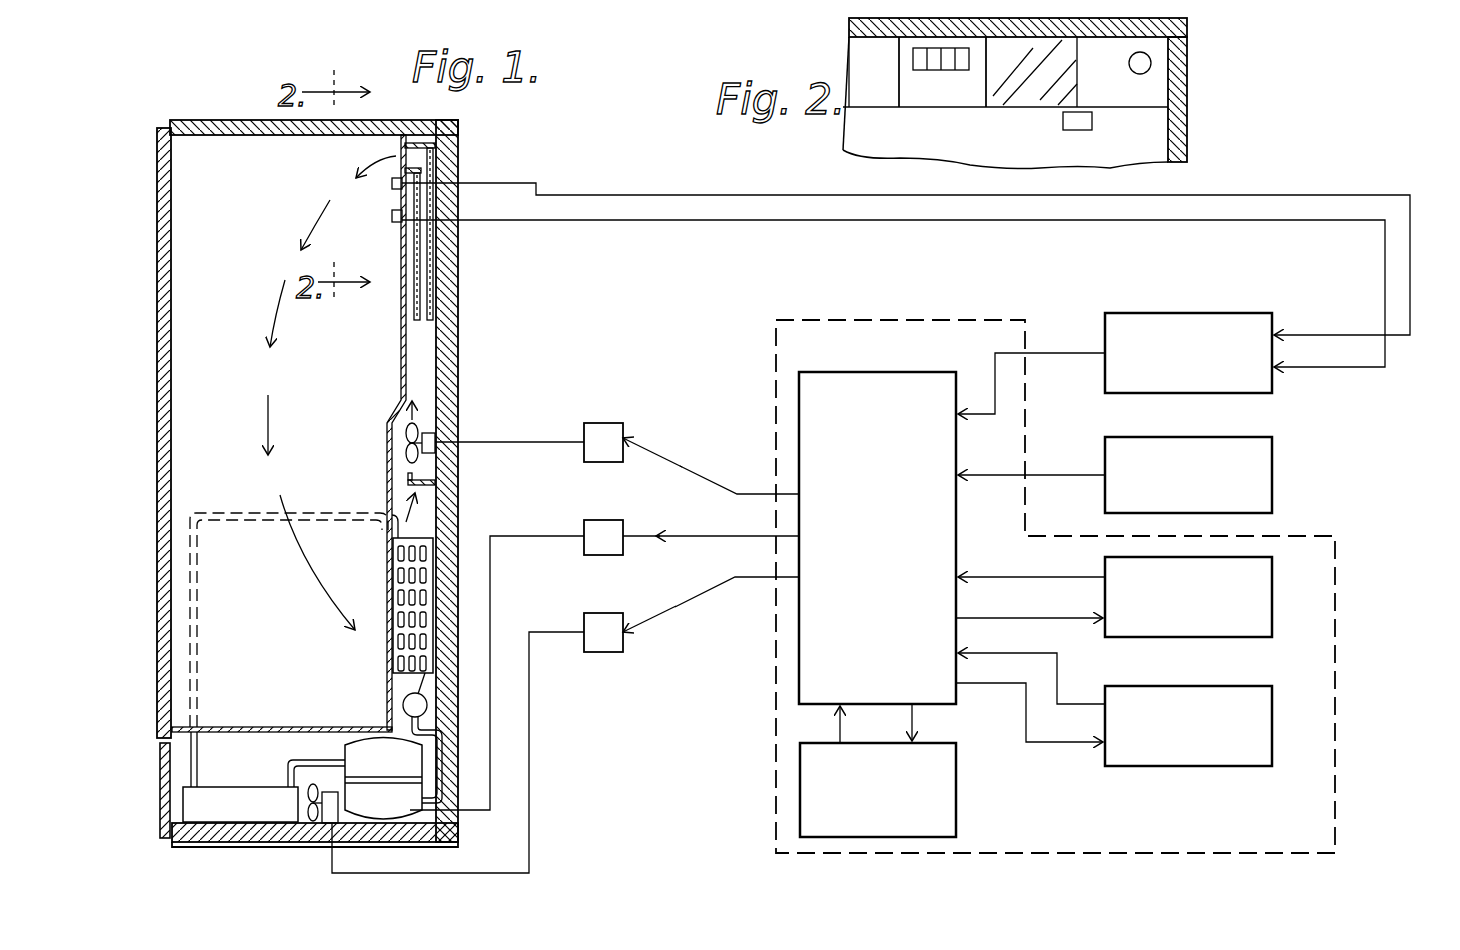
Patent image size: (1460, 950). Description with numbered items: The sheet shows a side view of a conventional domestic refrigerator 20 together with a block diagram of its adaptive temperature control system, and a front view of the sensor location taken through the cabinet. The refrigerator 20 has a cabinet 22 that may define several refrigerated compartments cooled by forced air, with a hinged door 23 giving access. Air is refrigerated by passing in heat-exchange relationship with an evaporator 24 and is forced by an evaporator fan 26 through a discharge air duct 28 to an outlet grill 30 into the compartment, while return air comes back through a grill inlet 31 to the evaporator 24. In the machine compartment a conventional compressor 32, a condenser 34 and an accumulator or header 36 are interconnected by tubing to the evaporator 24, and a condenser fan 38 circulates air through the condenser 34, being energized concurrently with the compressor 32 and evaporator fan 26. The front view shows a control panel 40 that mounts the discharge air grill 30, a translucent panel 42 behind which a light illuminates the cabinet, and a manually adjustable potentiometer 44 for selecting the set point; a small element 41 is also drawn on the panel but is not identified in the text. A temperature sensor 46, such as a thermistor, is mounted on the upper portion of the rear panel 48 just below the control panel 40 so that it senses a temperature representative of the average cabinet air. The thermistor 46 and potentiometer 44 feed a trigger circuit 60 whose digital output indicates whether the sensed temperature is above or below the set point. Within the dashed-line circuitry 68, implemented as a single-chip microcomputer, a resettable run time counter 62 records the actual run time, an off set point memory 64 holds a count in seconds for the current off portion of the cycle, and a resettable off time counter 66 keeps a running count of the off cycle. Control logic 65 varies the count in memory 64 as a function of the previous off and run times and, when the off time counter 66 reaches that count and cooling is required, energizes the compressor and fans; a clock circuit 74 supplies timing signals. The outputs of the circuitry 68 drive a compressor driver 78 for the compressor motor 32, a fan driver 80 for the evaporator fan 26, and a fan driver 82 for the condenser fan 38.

In FIG. 1, the refrigerator 20 is at (211, 118).
In FIG. 1, the cabinet 22 is at (262, 136).
In FIG. 2, the cabinet 22 is at (1185, 134).
In FIG. 1, the hinged door 23 is at (170, 370).
In FIG. 1, the evaporator 24 is at (400, 560).
In FIG. 1, the evaporator fan 26 is at (437, 424).
In FIG. 1, the discharge air duct 28 is at (431, 306).
In FIG. 1, the outlet grill 30 is at (398, 147).
In FIG. 2, the outlet grill 30 is at (956, 71).
In FIG. 1, the grill inlet 31 is at (380, 617).
In FIG. 1, the compressor 32 is at (464, 677).
In FIG. 1, the condenser 34 is at (239, 798).
In FIG. 1, the accumulator or header 36 is at (403, 705).
In FIG. 1, the condenser fan 38 is at (330, 806).
In FIG. 2, the control panel 40 is at (948, 110).
In FIG. 2, the switch 41 is at (1075, 130).
In FIG. 2, the translucent panel 42 is at (1031, 99).
In FIG. 1, the potentiometer 44 is at (391, 186).
In FIG. 2, the potentiometer 44 is at (1148, 62).
In FIG. 1, the temperature sensor 46 is at (393, 223).
In FIG. 1, the rear panel 48 is at (402, 290).
In FIG. 2, the rear panel 48 is at (848, 136).
In FIG. 1, the trigger circuit 60 is at (1234, 321).
In FIG. 1, the run time counter 62 is at (1272, 722).
In FIG. 1, the off set point memory 64 is at (956, 829).
In FIG. 1, the control logic 65 is at (884, 612).
In FIG. 1, the off time counter 66 is at (1272, 614).
In FIG. 1, the integrated circuit 68 is at (796, 320).
In FIG. 1, the clock circuit 74 is at (1272, 460).
In FIG. 1, the compressor driver 78 is at (590, 540).
In FIG. 1, the fan driver 80 is at (601, 440).
In FIG. 1, the fan driver 82 is at (607, 660).